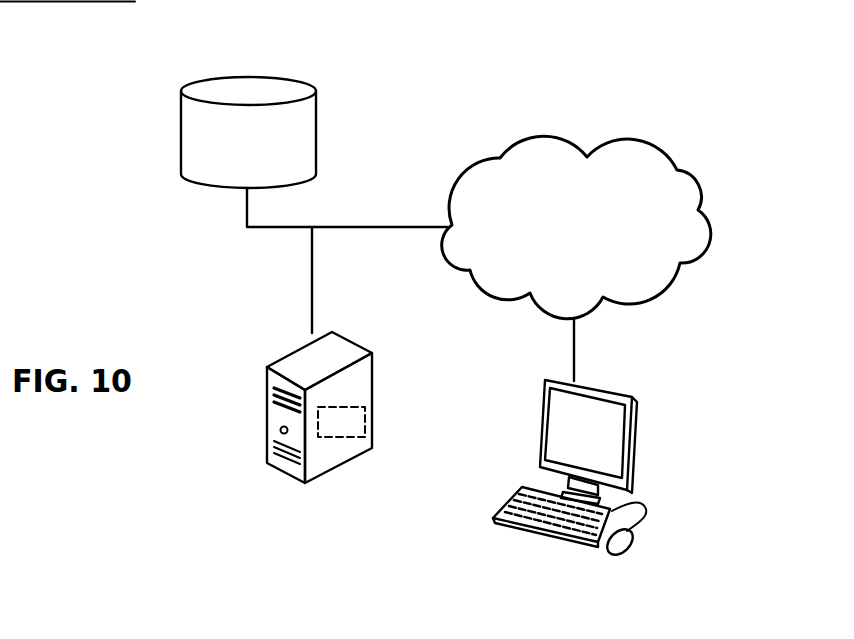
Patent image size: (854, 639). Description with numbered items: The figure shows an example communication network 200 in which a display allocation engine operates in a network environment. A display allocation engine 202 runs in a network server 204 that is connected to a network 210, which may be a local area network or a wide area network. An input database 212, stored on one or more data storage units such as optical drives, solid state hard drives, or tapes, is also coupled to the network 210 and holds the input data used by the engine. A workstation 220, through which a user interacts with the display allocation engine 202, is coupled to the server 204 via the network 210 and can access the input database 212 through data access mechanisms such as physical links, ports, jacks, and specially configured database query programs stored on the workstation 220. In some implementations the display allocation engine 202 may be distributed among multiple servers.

The communication network 200 is at (431, 41).
The display allocation engine 202 is at (366, 421).
The network server 204 is at (325, 475).
The network 210 is at (554, 230).
The input database 212 is at (228, 172).
The workstation 220 is at (633, 432).